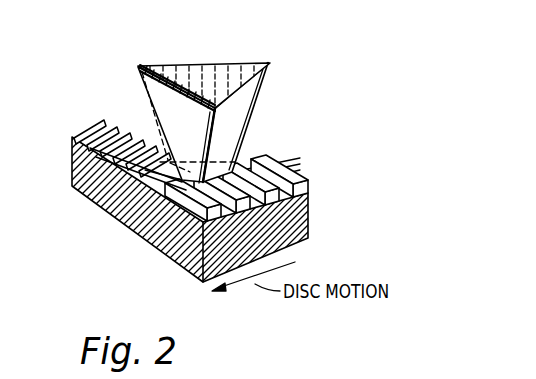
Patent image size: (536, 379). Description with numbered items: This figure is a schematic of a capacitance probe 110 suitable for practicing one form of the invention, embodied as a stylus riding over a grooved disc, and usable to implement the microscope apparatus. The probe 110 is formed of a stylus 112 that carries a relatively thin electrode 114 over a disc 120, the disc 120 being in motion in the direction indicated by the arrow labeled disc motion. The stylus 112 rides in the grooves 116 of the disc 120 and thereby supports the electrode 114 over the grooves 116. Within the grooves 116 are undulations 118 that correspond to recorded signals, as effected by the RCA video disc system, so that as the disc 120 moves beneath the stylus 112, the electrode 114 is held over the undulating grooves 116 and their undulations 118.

The probe 110 is at (240, 165).
The stylus 112 is at (250, 116).
The electrode 114 is at (138, 67).
The grooves 116 is at (137, 183).
The undulations 118 is at (292, 180).
The disc 120 is at (310, 221).